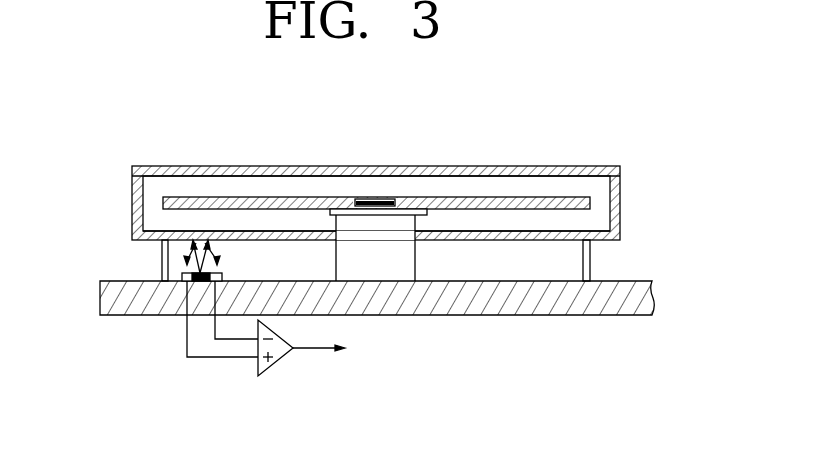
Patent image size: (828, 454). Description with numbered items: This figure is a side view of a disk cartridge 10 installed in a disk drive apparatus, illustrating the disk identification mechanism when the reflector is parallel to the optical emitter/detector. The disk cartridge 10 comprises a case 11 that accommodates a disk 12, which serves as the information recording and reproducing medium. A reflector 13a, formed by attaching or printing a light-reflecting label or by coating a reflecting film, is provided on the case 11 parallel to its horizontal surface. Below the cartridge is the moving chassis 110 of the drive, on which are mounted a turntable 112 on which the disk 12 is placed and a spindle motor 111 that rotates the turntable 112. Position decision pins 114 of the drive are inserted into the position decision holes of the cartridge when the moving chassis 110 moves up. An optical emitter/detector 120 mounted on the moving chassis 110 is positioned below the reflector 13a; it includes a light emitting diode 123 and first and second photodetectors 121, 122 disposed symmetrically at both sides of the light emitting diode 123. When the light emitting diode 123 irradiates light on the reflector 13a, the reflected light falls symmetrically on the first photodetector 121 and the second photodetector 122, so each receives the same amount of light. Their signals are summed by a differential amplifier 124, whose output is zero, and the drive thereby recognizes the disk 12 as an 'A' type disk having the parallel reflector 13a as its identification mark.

The disk cartridge 10 is at (356, 148).
The case 11 is at (132, 190).
The disk 12 is at (591, 200).
The reflector 13a is at (132, 233).
The moving chassis 110 is at (538, 303).
The spindle motor 111 is at (415, 265).
The turntable 112 is at (392, 199).
The position decision pins 114 is at (162, 256).
The optical emitter/detector 120 is at (202, 315).
The first photodetector 121 is at (181, 281).
The second photodetector 122 is at (280, 265).
The light emitting diode 123 is at (192, 282).
The differential amplifier 124 is at (275, 365).